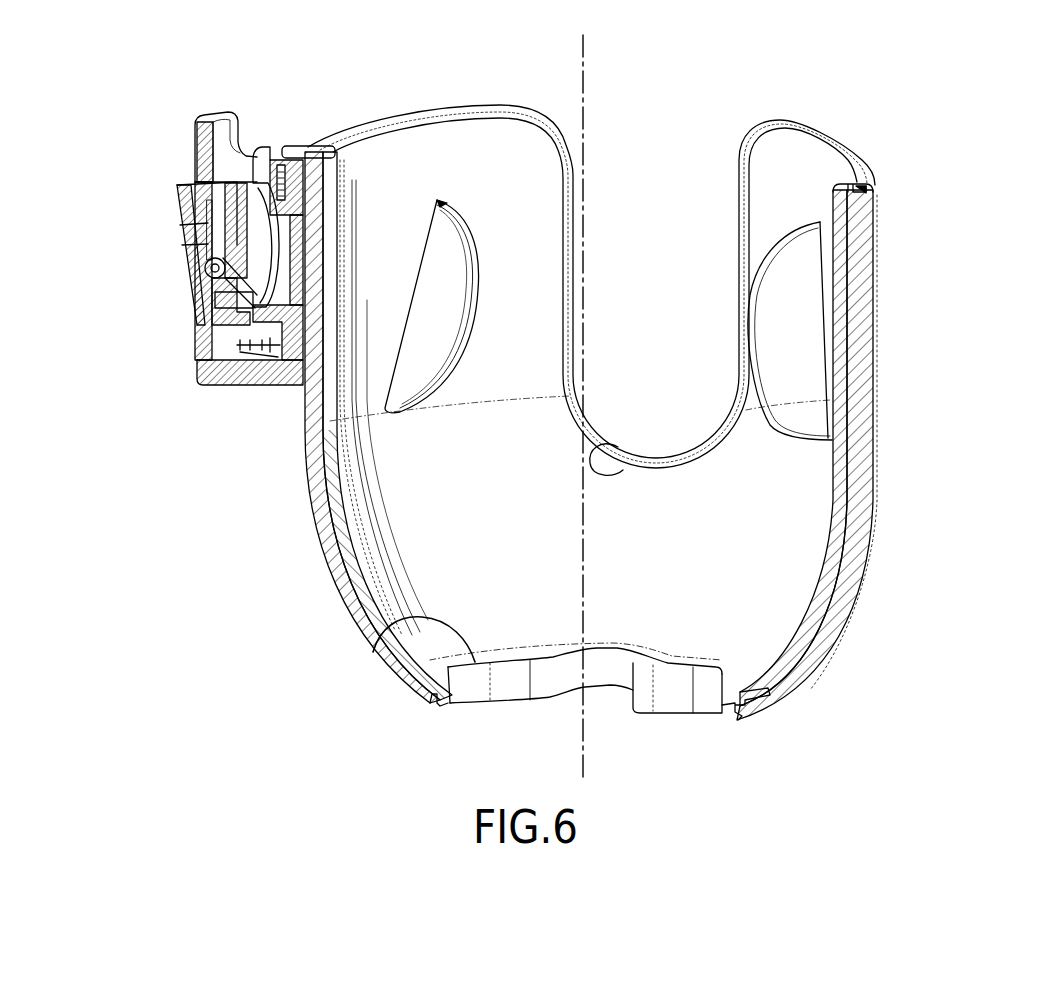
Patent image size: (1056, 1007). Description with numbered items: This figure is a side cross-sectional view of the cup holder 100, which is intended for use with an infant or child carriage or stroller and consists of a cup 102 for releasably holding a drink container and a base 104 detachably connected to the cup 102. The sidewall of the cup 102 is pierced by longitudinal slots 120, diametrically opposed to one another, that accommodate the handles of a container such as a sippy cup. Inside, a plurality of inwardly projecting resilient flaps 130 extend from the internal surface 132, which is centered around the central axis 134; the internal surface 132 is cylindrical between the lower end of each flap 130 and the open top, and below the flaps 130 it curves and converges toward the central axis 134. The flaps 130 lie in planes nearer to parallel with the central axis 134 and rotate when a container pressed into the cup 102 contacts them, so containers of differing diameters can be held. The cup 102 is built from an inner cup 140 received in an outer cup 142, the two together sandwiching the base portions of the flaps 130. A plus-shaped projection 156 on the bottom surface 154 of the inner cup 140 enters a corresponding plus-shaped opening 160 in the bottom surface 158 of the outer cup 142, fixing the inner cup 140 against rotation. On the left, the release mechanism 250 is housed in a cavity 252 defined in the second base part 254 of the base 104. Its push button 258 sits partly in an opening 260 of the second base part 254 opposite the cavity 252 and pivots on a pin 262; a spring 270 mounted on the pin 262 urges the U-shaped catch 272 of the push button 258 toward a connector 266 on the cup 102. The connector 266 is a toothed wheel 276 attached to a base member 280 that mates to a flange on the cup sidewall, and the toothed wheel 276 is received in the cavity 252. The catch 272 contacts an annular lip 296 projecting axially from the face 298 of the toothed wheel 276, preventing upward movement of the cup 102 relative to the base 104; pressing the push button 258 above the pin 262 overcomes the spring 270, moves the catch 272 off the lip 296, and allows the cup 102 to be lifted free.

The cup holder 100 is at (748, 106).
The cup 102 is at (938, 395).
The base 104 is at (112, 377).
The longitudinal slots 120 is at (592, 447).
The flaps 130 is at (418, 386).
The internal surface 132 is at (472, 148).
The central axis 134 is at (584, 118).
The inner cup 140 is at (833, 517).
The outer cup 142 is at (863, 560).
The bottom surface of the inner cup 154 is at (406, 664).
The projection 156 is at (472, 690).
The bottom surface of the outer cup 158 is at (415, 702).
The opening 160 is at (733, 717).
The release mechanism 250 is at (208, 244).
The cavity 252 is at (278, 167).
The second base part 254 is at (220, 377).
The push button 258 is at (183, 195).
The opening 260 is at (205, 180).
The pin 262 is at (207, 267).
The connector 266 is at (275, 188).
The spring 270 is at (186, 226).
The catch 272 is at (233, 313).
The toothed wheel 276 is at (280, 199).
The base member 280 is at (315, 340).
The lip 296 is at (252, 346).
The face 298 is at (209, 215).